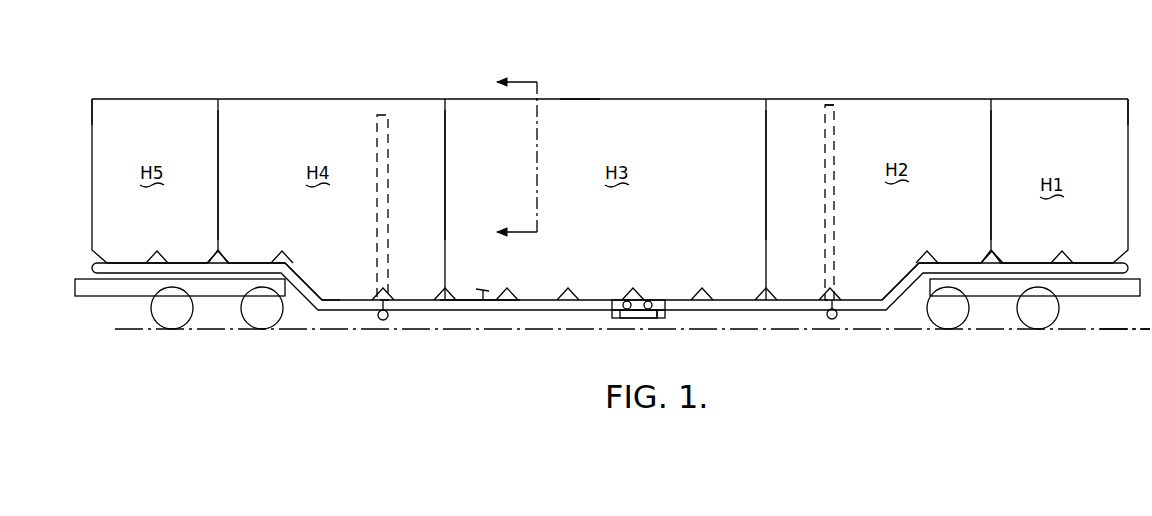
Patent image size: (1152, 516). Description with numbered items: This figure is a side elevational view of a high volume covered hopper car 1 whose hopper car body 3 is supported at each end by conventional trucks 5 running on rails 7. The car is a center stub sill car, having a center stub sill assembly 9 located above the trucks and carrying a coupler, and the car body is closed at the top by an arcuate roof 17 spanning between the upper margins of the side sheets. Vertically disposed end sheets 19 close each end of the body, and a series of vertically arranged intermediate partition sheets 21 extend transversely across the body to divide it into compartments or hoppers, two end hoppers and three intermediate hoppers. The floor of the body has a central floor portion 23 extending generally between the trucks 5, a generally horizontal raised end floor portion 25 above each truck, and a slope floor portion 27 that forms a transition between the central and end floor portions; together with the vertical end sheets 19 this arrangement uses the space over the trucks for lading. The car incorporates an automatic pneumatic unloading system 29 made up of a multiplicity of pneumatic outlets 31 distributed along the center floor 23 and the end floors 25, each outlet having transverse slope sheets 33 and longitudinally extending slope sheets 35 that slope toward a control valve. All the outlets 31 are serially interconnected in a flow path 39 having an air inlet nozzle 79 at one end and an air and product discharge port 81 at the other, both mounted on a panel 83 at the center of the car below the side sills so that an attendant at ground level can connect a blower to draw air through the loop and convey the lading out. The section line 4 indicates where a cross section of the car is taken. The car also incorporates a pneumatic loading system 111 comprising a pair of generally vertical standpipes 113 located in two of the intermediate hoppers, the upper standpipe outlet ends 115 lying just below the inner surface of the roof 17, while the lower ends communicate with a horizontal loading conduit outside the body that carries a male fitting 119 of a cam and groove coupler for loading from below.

The covered hopper car 1 is at (1005, 80).
The hopper car body 3 is at (650, 98).
The section line 4- 4 is at (501, 156).
The trucks 5 is at (293, 314).
The rails 7 is at (1118, 331).
The center stub sill assembly 9 is at (130, 295).
The arcuate roof 17 is at (577, 99).
The end sheets 19 is at (90, 125).
The intermediate partition sheets 21 is at (218, 184).
The central floor portion 23 is at (598, 297).
The end floor portion 25 is at (191, 242).
The slope floor portion 27 is at (292, 268).
The automatic pneumatic unloading system 29 is at (654, 297).
The pneumatic outlets 31 is at (536, 296).
The transverse slope sheets 33 is at (448, 300).
The longitudinally extending slope sheets 35 is at (484, 293).
The flow path 39 is at (347, 313).
The air inlet nozzle 79 is at (627, 313).
The air and product discharge port 81 is at (656, 316).
The panel 83 is at (648, 313).
The pneumatic loading system 111 is at (383, 321).
The standpipes 113 is at (377, 150).
The standpipe outlet ends 115 is at (827, 103).
The male fitting 119 is at (389, 318).